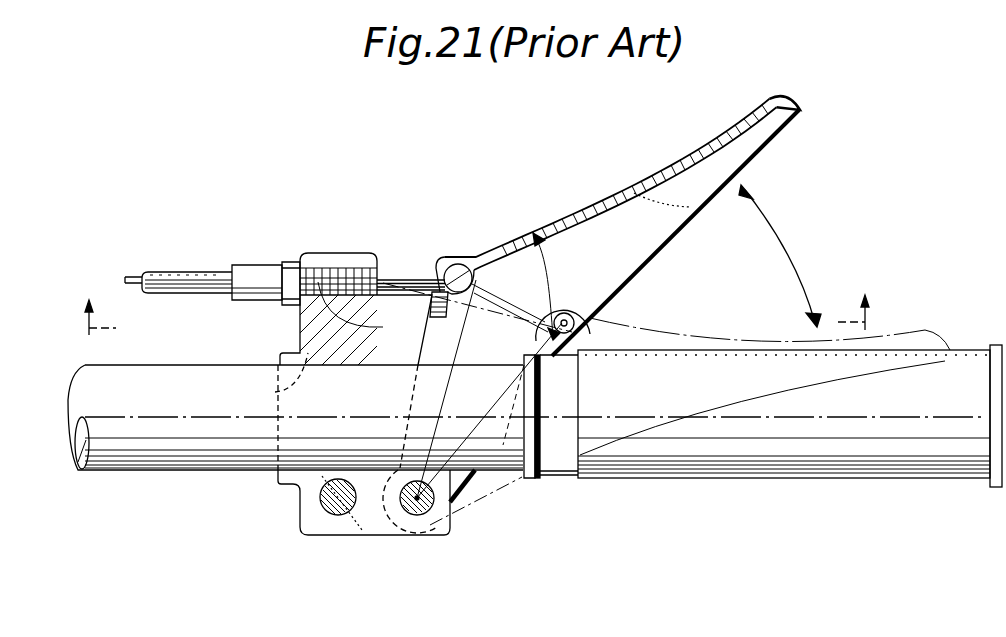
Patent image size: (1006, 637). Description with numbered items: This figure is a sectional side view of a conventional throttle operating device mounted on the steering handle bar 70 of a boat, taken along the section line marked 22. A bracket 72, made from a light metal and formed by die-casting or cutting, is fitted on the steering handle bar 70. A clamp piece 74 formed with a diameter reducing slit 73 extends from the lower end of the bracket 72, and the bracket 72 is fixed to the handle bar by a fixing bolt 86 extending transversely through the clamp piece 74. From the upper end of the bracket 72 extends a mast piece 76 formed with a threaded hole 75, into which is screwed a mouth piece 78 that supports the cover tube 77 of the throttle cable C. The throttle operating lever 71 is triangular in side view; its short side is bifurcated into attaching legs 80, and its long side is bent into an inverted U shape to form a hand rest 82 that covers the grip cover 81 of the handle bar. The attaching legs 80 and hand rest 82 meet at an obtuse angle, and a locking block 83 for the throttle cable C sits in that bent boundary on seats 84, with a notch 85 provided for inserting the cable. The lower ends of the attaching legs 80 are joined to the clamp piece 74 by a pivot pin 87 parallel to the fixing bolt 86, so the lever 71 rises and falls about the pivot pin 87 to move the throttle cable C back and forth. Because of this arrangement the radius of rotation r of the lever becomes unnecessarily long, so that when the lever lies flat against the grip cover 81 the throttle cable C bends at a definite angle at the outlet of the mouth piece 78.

The steering handle bar 70 is at (193, 440).
The throttle operating lever 71 is at (682, 222).
The bracket 72 is at (290, 342).
The diameter reducing slit 73 is at (275, 392).
The clamp piece 74 is at (378, 530).
The threaded hole 75 is at (328, 283).
The mast piece 76 is at (303, 311).
The cover tube 77 is at (197, 275).
The mouth piece 78 is at (263, 268).
The attaching legs 80 is at (458, 475).
The grip cover 81 is at (775, 463).
The hand rest 82 is at (600, 204).
The locking block 83 is at (461, 271).
The seats 84 is at (449, 310).
The notch 85 is at (428, 286).
The fixing bolt 86 is at (340, 507).
The pivot pin 87 is at (418, 512).
The section line 22- 22 is at (477, 308).
The throttle cable C is at (132, 278).
The radius of rotation r is at (489, 389).